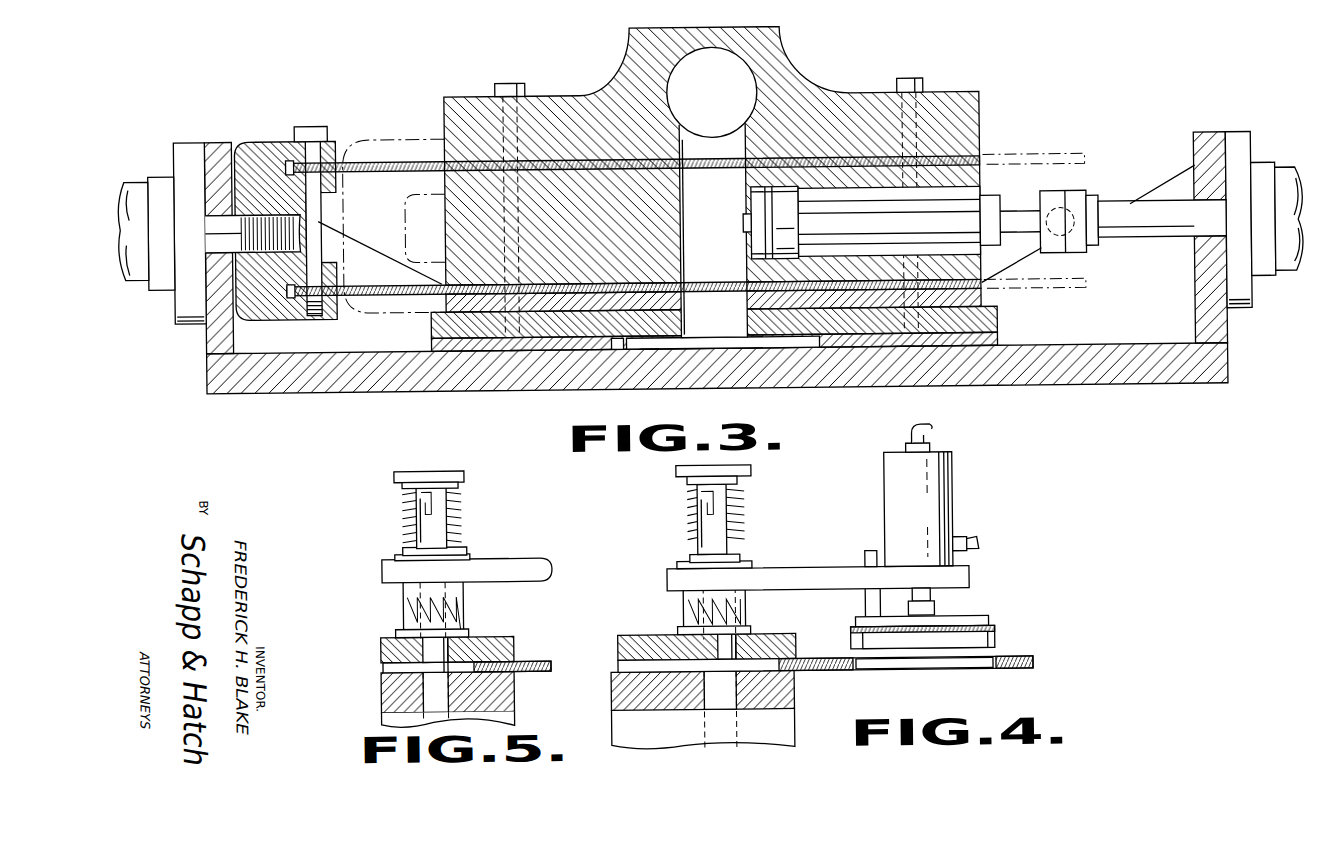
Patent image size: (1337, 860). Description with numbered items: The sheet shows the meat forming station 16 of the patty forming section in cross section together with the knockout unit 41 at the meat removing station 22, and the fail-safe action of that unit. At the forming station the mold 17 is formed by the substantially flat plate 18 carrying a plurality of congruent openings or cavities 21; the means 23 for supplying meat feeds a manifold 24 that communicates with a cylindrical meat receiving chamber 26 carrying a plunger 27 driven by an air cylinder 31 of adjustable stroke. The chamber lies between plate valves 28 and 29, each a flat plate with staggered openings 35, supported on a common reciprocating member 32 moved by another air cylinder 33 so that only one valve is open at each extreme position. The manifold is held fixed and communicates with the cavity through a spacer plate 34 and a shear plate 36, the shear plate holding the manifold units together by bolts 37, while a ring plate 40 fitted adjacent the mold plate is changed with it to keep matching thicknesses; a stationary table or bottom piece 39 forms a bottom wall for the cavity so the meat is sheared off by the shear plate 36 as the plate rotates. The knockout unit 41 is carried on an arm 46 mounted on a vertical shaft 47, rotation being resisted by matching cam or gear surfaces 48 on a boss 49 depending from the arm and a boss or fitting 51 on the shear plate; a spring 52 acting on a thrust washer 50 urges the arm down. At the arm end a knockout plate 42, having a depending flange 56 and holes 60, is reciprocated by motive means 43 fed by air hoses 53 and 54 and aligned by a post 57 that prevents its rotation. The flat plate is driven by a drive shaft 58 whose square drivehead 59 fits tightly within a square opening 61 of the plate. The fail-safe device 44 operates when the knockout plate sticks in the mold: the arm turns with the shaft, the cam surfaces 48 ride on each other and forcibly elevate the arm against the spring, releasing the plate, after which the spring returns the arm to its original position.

In FIG. 3, the meat forming station 16 is at (650, 356).
In FIG. 3, the mold 17 is at (803, 349).
In FIG. 3, the substantially flat plate 18 is at (520, 349).
In FIG. 5, the substantially flat plate 18 is at (535, 671).
In FIG. 4, the substantially flat plate 18 is at (1032, 665).
In FIG. 3, the opening or cavity 21 is at (616, 349).
In FIG. 4, the opening or cavity 21 is at (968, 672).
In FIG. 4, the meat removing station 22 is at (906, 676).
In FIG. 3, the means for supplying meat 23 is at (992, 127).
In FIG. 3, the manifold 24 is at (690, 152).
In FIG. 3, the meat receiving chamber 26 is at (750, 203).
In FIG. 3, the plunger 27 is at (768, 238).
In FIG. 3, the plate valve 28 is at (660, 172).
In FIG. 3, the plate valve 29 is at (661, 285).
In FIG. 3, the air cylinder 31 is at (1290, 172).
In FIG. 3, the reciprocating member 32 is at (283, 136).
In FIG. 3, the air cylinder 33 is at (130, 178).
In FIG. 3, the spacer plate 34 is at (985, 300).
In FIG. 3, the openings 35 is at (687, 168).
In FIG. 3, the shear plate 36 is at (1000, 314).
In FIG. 5, the shear plate 36 is at (505, 640).
In FIG. 4, the shear plate 36 is at (793, 640).
In FIG. 3, the bolts 37 is at (500, 85).
In FIG. 3, the table or bottom piece 39 is at (345, 389).
In FIG. 4, the table or bottom piece 39 is at (615, 683).
In FIG. 3, the ring plate 40 is at (1000, 343).
In FIG. 4, the knockout unit 41 is at (983, 580).
In FIG. 4, the knockout plate 42 is at (990, 625).
In FIG. 4, the motive means 43 is at (950, 505).
In FIG. 5, the fail-safe device 44 is at (372, 580).
In FIG. 4, the fail-safe device 44 is at (660, 581).
In FIG. 5, the arm 46 is at (535, 558).
In FIG. 4, the arm 46 is at (795, 568).
In FIG. 5, the shaft 47 is at (445, 520).
In FIG. 4, the shaft 47 is at (700, 530).
In FIG. 5, the cam or gear surfaces 48 is at (458, 605).
In FIG. 4, the cam or gear surfaces 48 is at (683, 612).
In FIG. 5, the boss 49 is at (403, 590).
In FIG. 4, the boss 49 is at (745, 602).
In FIG. 5, the thrust washer 50 is at (468, 554).
In FIG. 4, the thrust washer 50 is at (750, 562).
In FIG. 5, the boss or fitting 51 is at (393, 631).
In FIG. 4, the boss or fitting 51 is at (750, 630).
In FIG. 5, the spring 52 is at (398, 488).
In FIG. 4, the spring 52 is at (688, 482).
In FIG. 4, the air hose 53 is at (934, 431).
In FIG. 4, the air hose 54 is at (978, 548).
In FIG. 4, the depending flange 56 is at (993, 644).
In FIG. 4, the post 57 is at (870, 552).
In FIG. 5, the drive shaft 58 is at (420, 690).
In FIG. 4, the drive shaft 58 is at (725, 690).
In FIG. 5, the square drivehead 59 is at (384, 667).
In FIG. 4, the square drivehead 59 is at (684, 690).
In FIG. 4, the holes 60 is at (870, 618).
In FIG. 5, the square opening 61 is at (480, 665).
In FIG. 4, the square opening 61 is at (773, 672).